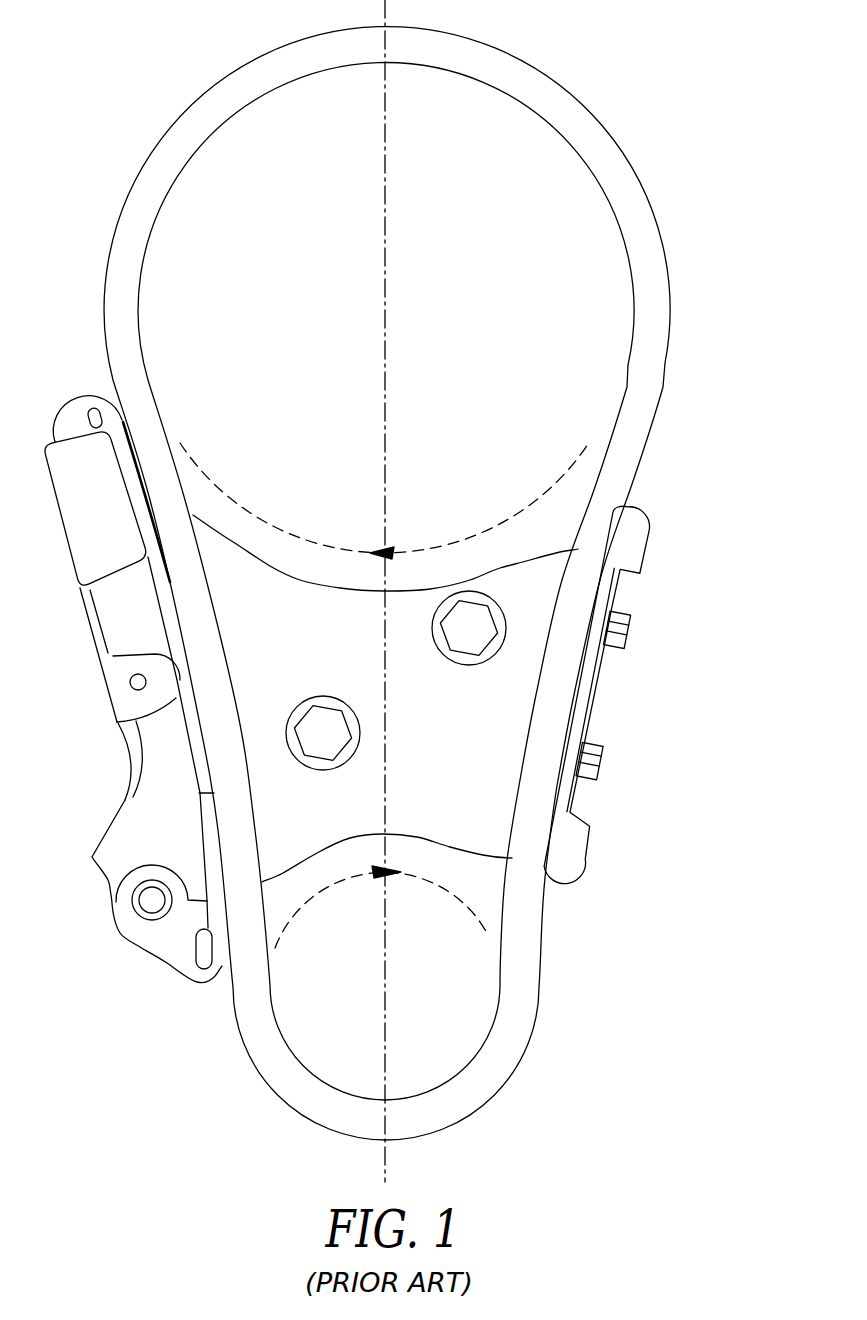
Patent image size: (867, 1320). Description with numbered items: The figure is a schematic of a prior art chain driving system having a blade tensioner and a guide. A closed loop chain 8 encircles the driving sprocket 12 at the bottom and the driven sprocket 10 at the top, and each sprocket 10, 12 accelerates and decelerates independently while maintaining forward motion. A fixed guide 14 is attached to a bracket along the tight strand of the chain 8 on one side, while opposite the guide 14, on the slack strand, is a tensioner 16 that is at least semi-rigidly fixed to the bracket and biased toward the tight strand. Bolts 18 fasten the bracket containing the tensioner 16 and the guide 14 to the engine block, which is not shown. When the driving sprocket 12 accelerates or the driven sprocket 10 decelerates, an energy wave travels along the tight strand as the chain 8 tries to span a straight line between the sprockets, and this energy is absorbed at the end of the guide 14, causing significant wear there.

The chain 8 is at (565, 108).
The driven sprocket 10 is at (495, 229).
The driving sprocket 12 is at (452, 1030).
The guide 14 is at (637, 528).
The tensioner 16 is at (150, 800).
The bolts 18 is at (361, 735).